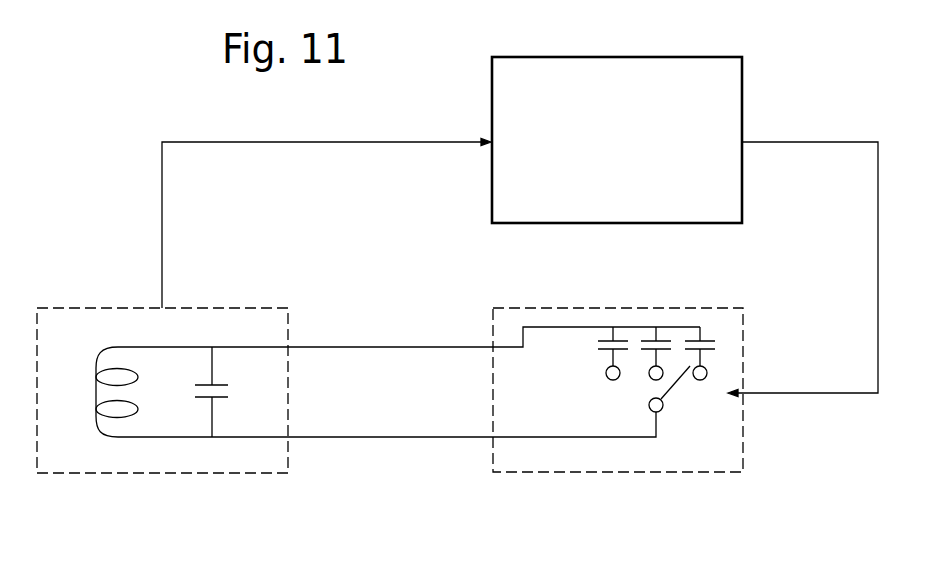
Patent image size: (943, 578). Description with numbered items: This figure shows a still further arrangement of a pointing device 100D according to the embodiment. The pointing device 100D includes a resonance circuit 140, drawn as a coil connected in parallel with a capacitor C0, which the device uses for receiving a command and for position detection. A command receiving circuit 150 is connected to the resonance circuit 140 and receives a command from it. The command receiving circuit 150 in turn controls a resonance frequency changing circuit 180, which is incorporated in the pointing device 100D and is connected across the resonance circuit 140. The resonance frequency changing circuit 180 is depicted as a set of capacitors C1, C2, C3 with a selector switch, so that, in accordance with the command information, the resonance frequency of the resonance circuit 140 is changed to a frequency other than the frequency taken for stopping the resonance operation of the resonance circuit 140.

The pointing device 100D is at (129, 173).
The command receiving circuit 150 is at (742, 92).
The resonance circuit 140 is at (368, 420).
The resonance frequency changing circuit 180 is at (651, 404).
The capacitor of resonance circuit C0 is at (224, 392).
The switchable capacitor 1 C1 is at (598, 342).
The switchable capacitor 2 C2 is at (650, 342).
The switchable capacitor 3 C3 is at (707, 342).